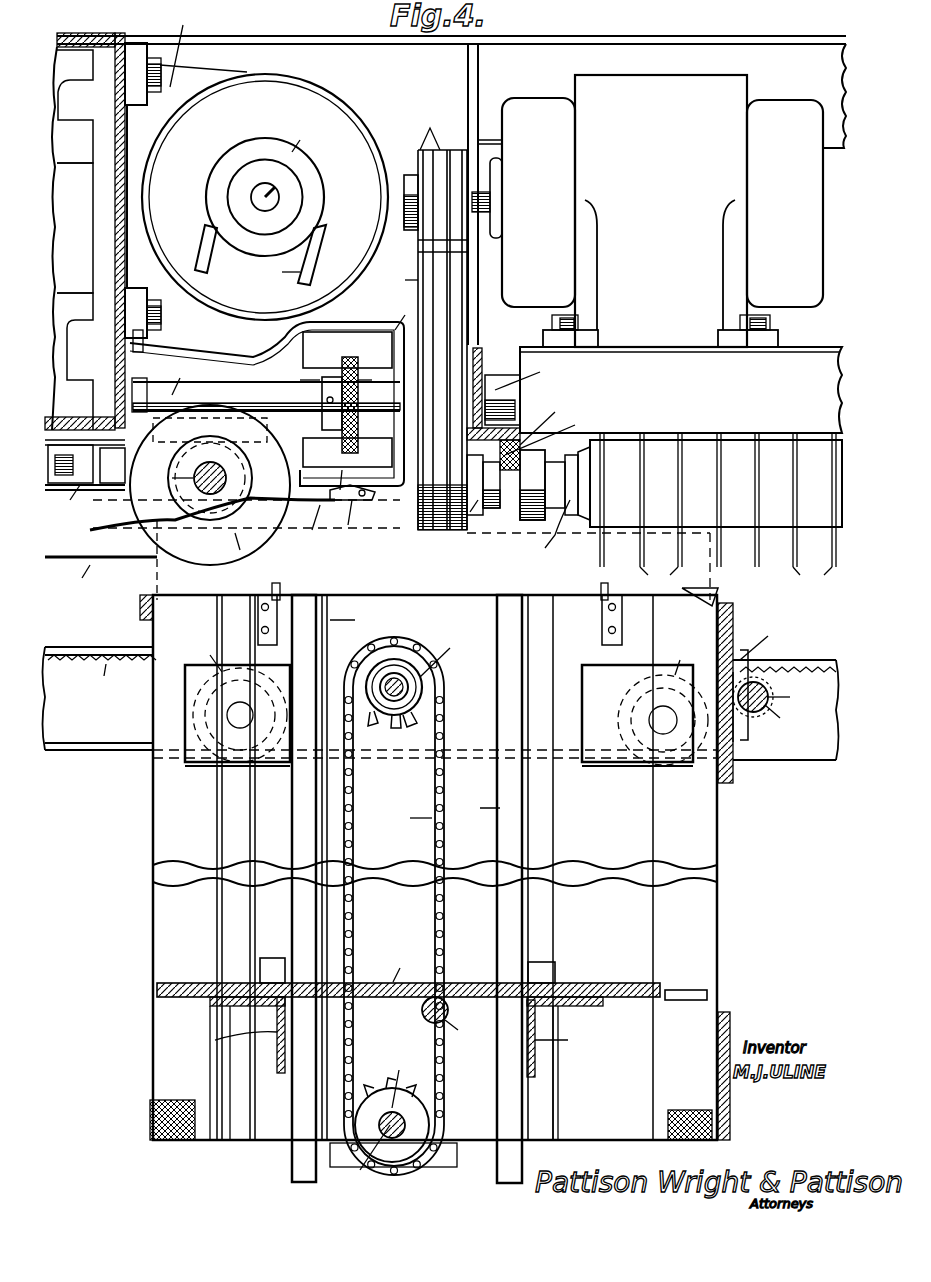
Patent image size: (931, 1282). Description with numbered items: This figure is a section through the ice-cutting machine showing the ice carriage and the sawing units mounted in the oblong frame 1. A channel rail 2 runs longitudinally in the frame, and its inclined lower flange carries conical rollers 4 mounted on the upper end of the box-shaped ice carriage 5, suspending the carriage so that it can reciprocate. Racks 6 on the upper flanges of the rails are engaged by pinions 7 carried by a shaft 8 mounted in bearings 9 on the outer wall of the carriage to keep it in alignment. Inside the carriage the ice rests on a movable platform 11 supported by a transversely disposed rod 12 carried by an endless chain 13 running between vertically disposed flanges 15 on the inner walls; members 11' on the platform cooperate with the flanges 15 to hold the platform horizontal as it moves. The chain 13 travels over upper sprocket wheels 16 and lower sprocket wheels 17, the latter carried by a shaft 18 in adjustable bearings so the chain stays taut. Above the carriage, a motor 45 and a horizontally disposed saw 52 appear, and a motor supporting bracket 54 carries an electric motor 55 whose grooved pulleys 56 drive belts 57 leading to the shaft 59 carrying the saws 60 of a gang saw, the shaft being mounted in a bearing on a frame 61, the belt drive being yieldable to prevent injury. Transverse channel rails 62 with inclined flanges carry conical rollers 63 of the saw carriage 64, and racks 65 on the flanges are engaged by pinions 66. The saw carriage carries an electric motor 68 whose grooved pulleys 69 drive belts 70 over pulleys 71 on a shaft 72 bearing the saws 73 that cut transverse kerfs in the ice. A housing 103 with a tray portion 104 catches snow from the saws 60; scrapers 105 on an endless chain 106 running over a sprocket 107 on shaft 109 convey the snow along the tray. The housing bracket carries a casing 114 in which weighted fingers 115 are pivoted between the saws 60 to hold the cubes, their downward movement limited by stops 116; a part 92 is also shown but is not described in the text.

The oblong frame 1 is at (451, 190).
The channel rail 2 is at (441, 703).
The conical rollers 4 is at (446, 701).
The ice carriage 5 is at (436, 889).
The racks 6 is at (103, 682).
The pinions 7 is at (768, 697).
The shaft 8 is at (779, 720).
The bearings 9 is at (757, 679).
The platform 11 is at (432, 973).
The members 11' is at (387, 1068).
The transversely disposed rod 12 is at (452, 1021).
The endless chain 13 is at (394, 906).
The flanges 15 is at (440, 700).
The sprocket wheels 16 is at (419, 678).
The sprocket wheels 17 is at (392, 1103).
The shaft 18 is at (358, 1164).
The motor 45 is at (106, 231).
The saw 52 is at (101, 560).
The motor supporting bracket 54 is at (202, 45).
The electric motor 55 is at (265, 197).
The grooved pulleys 56 is at (265, 186).
The belts 57 is at (260, 257).
The shaft 59 is at (182, 476).
The saws 60 is at (210, 491).
The frame 61 is at (444, 195).
The channel rails 62 is at (637, 328).
The conical rollers 63 is at (518, 394).
The saw carriage 64 is at (681, 390).
The racks 65 is at (541, 431).
The pinions 66 is at (538, 461).
The electric motor 68 is at (647, 211).
The grooved pulleys 69 is at (436, 315).
The belts 70 is at (423, 231).
The pulleys 71 is at (487, 518).
The shaft 72 is at (550, 532).
The saws 73 is at (654, 519).
The guide 92 is at (85, 469).
The housing 103 is at (391, 310).
The tray portion 104 is at (351, 520).
The scrapers 105 is at (267, 404).
The endless chain 106 is at (369, 405).
The sprocket 107 is at (297, 398).
The shaft 109 is at (266, 384).
The casing 114 is at (361, 508).
The weighted fingers 115 is at (245, 525).
The stops 116 is at (367, 524).